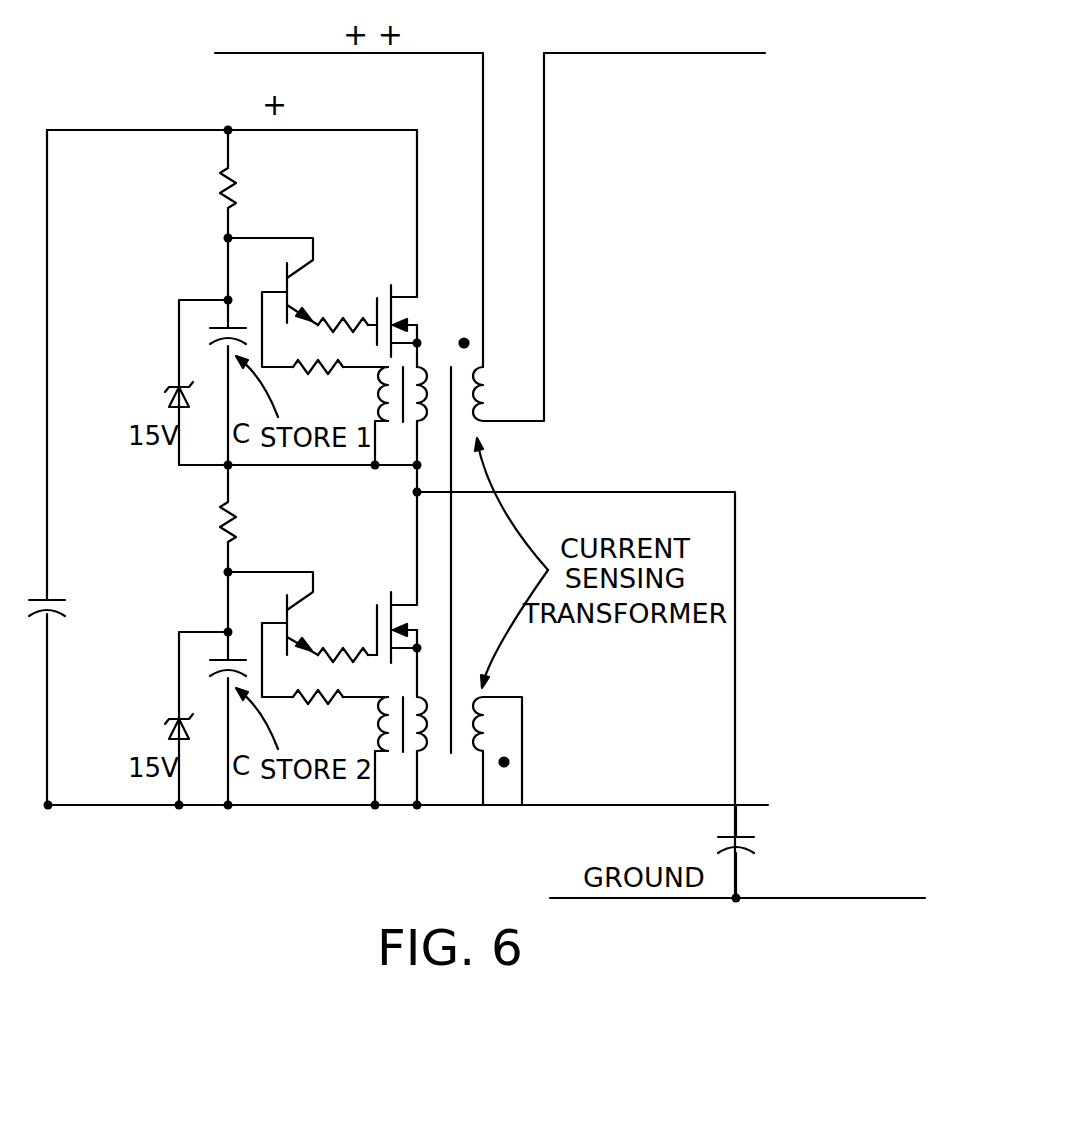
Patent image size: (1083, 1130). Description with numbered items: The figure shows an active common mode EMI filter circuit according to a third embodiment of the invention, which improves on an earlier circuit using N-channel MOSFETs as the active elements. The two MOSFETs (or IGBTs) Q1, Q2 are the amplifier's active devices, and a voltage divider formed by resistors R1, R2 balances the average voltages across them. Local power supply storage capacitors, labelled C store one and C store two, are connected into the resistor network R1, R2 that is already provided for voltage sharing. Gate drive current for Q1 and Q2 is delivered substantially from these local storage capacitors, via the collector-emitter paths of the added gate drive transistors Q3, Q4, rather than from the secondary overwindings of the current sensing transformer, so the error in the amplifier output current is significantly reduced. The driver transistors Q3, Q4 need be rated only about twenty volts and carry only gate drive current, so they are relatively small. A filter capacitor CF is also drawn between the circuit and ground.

The voltage divider resistor R1 is at (250, 188).
The voltage divider resistor R2 is at (250, 522).
The MOSFET Q1 is at (394, 302).
The MOSFET Q2 is at (394, 577).
The gate drive transistor Q3 is at (302, 296).
The gate drive transistor Q4 is at (302, 628).
The filter capacitor CF is at (756, 851).